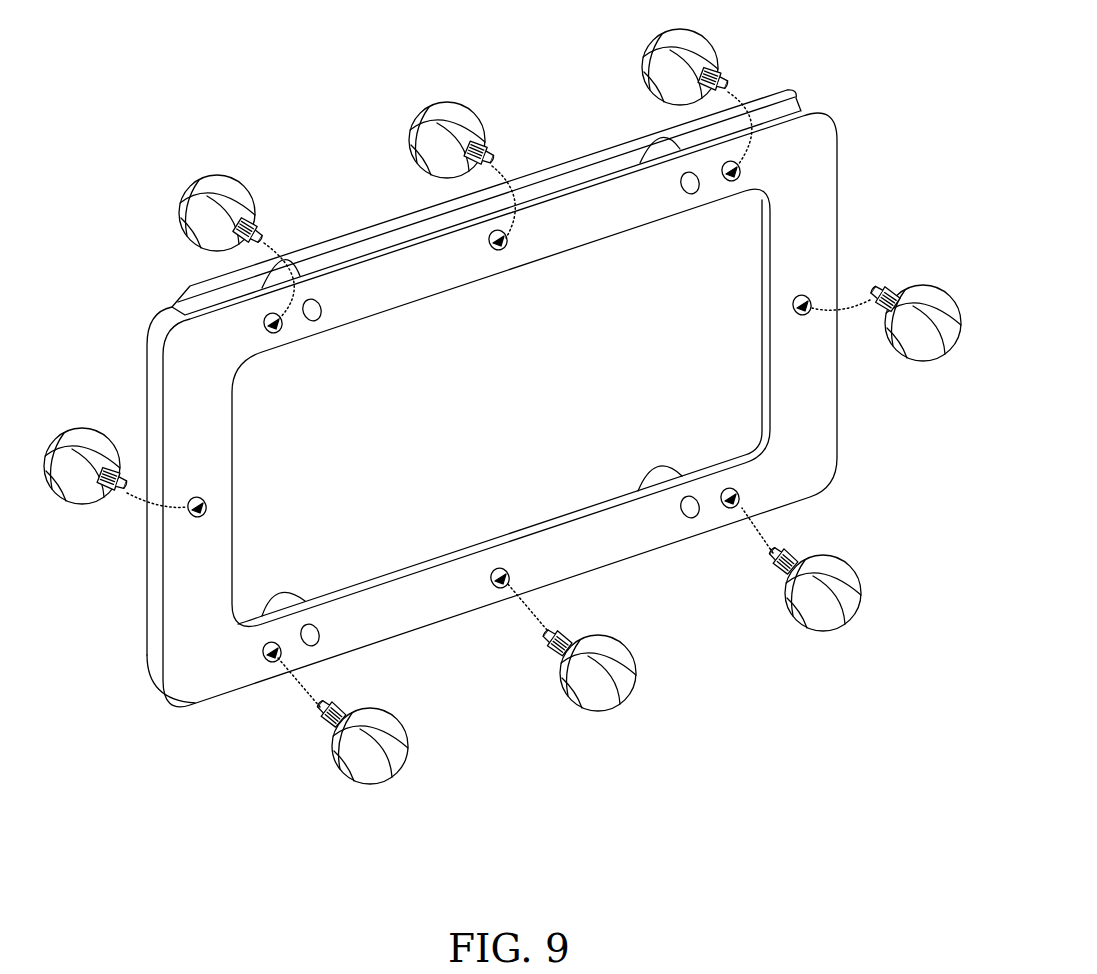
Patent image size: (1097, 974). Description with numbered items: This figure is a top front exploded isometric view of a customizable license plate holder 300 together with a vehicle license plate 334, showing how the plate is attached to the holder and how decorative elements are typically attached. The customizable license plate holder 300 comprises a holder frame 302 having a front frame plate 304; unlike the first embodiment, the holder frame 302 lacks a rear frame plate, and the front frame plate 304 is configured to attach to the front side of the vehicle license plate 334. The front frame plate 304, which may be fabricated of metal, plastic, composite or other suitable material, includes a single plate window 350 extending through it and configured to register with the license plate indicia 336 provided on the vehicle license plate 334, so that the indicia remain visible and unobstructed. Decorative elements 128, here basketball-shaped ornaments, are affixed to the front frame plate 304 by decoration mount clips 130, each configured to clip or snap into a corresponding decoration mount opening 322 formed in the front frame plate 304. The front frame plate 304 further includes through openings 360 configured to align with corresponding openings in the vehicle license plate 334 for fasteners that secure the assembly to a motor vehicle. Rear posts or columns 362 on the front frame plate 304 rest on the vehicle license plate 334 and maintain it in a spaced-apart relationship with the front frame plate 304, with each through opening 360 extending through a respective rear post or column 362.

The decorative element 128 is at (707, 42).
The decoration mount clip 130 is at (722, 72).
The customizable license plate holder 300 is at (500, 396).
The holder frame 302 is at (582, 582).
The front frame plate 304 is at (373, 623).
The decoration mount opening 322 is at (729, 180).
The vehicle license plate 334 is at (583, 148).
The license plate indicia 336 is at (723, 371).
The single plate window 350 is at (403, 507).
The through opening 360 is at (320, 313).
The rear post or column 362 is at (654, 145).